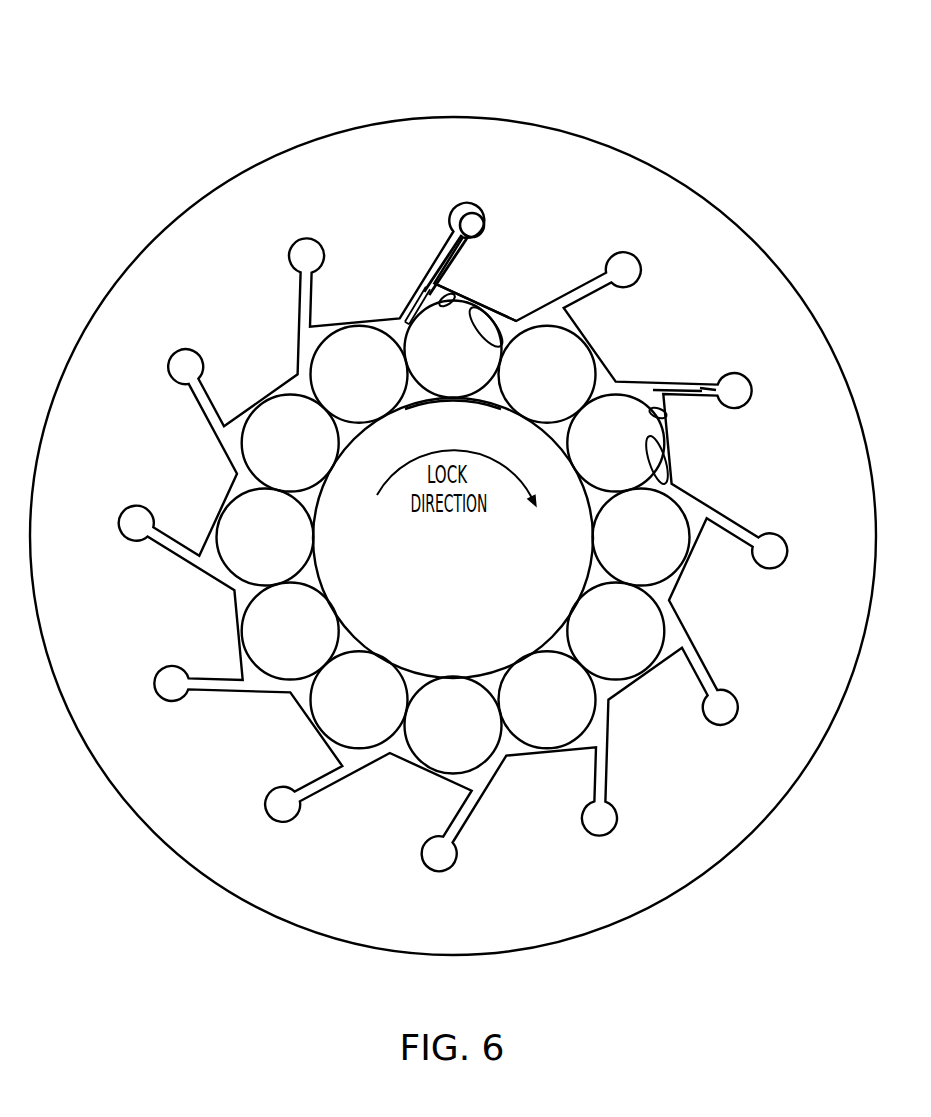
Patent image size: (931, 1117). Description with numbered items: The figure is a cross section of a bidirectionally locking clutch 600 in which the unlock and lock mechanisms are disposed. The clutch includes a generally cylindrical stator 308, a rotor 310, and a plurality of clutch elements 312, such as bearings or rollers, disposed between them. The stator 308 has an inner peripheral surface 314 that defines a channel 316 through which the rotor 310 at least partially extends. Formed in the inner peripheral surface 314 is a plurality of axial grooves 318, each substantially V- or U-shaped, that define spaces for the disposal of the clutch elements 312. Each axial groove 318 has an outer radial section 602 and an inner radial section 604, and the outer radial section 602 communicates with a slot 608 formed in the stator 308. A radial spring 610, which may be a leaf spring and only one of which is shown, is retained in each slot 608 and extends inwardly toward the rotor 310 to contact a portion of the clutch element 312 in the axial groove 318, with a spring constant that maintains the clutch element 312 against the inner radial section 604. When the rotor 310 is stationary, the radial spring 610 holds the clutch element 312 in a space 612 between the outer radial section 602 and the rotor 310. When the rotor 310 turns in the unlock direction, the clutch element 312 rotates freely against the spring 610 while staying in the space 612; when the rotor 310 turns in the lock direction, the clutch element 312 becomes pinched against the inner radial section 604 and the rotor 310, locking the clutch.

The bidirectionally locking clutch 600 is at (478, 59).
The stator 308 is at (690, 194).
The rotor 310 is at (466, 655).
The clutch elements 312 is at (476, 366).
The inner peripheral surface 314 is at (560, 308).
The channel 316 is at (456, 425).
The axial grooves 318 is at (432, 290).
The outer radial section 602 is at (452, 296).
The inner radial section 604 is at (497, 332).
The slot 608 is at (705, 388).
The radial springs 610 is at (412, 300).
The space 612 is at (484, 308).